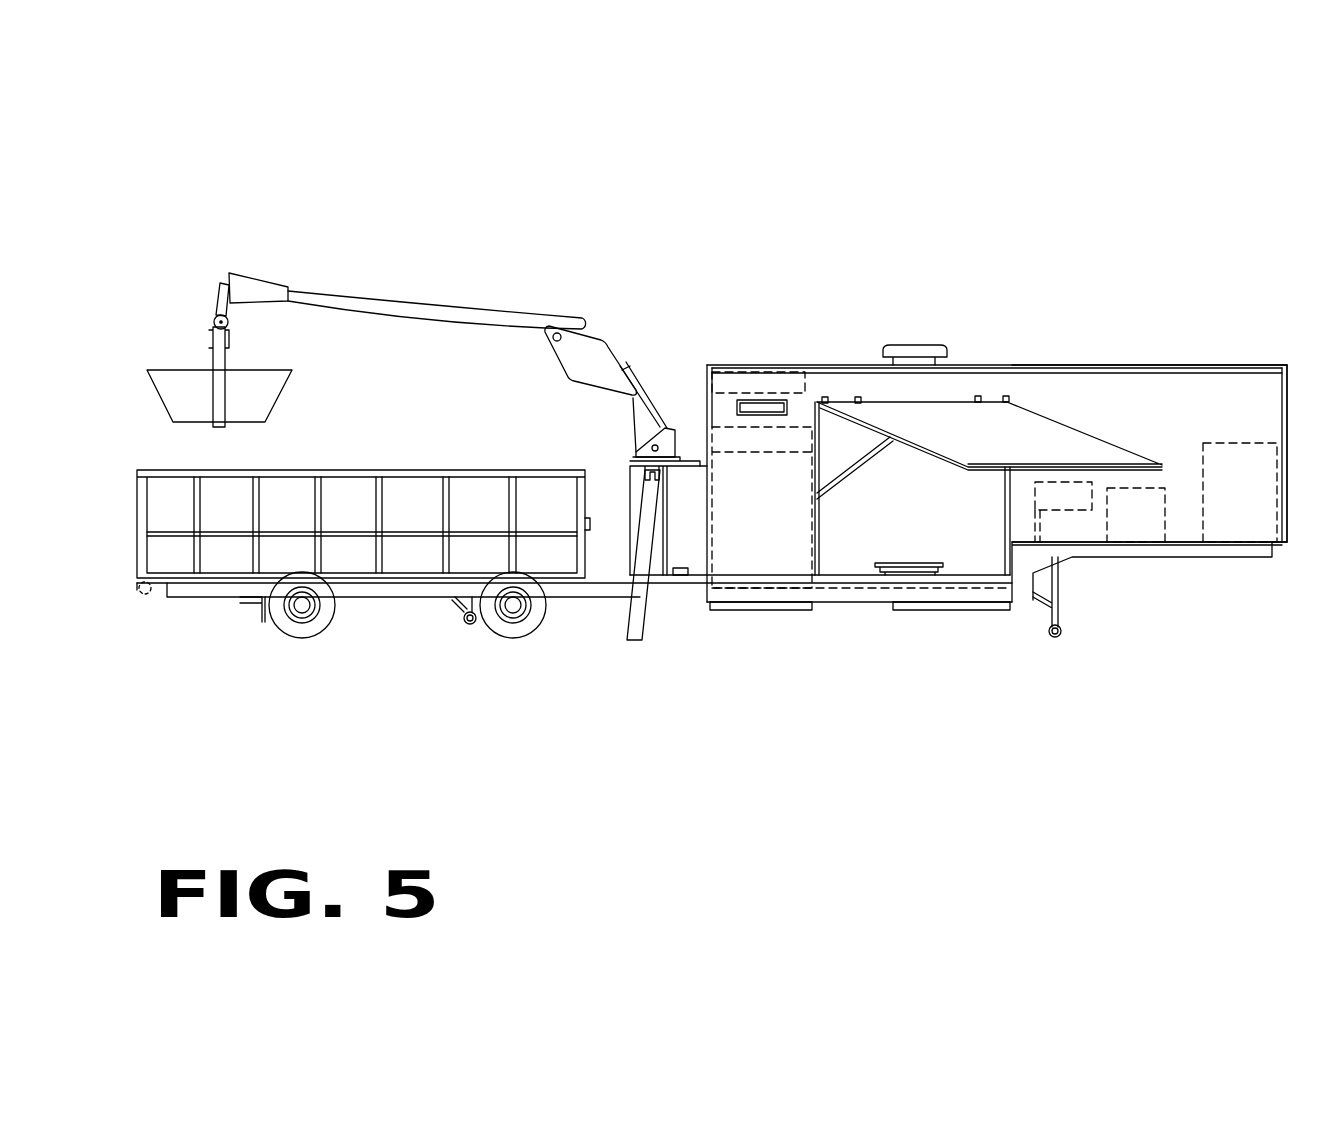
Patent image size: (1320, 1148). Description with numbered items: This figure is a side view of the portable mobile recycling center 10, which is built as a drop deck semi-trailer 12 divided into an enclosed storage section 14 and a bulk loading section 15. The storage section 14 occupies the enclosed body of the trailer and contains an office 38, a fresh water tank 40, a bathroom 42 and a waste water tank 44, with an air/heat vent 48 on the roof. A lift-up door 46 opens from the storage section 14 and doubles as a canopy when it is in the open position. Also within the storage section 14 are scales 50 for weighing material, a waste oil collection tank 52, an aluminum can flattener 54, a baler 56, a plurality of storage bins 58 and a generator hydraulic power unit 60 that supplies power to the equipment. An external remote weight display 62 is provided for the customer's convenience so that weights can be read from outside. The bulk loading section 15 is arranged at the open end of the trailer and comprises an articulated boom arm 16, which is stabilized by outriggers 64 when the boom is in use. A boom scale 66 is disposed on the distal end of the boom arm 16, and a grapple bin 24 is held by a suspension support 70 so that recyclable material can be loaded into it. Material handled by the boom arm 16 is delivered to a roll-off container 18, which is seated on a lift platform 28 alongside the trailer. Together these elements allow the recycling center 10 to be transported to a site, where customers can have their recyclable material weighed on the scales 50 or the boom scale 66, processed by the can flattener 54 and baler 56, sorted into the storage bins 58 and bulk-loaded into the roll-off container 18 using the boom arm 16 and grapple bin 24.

The portable mobile recycling center 10 is at (1172, 172).
The drop deck semi-trailer 12 is at (857, 266).
The enclosed storage section 14 is at (1125, 370).
The bulk loading section 15 is at (420, 286).
The articulated boom arm 16 is at (352, 297).
The roll-off container 18 is at (418, 563).
The grapple bin 24 is at (195, 370).
The lift platform 28 is at (228, 578).
The office 38 is at (717, 432).
The fresh water tank 40 is at (757, 380).
The bathroom 42 is at (732, 565).
The waste water tank 44 is at (740, 610).
The lift-up door 46 is at (910, 410).
The air/heat vent 48 is at (920, 345).
The scales 50 is at (892, 570).
The waste oil collection tank 52 is at (953, 608).
The aluminum can flattener 54 is at (1058, 532).
The baler 56 is at (1063, 483).
The storage bins 58 is at (1143, 527).
The generator hydraulic power unit 60 is at (1243, 443).
The external remote weight display 62 is at (710, 380).
The outriggers 64 is at (645, 483).
The boom scale 66 is at (232, 322).
The suspension support 70 is at (215, 400).